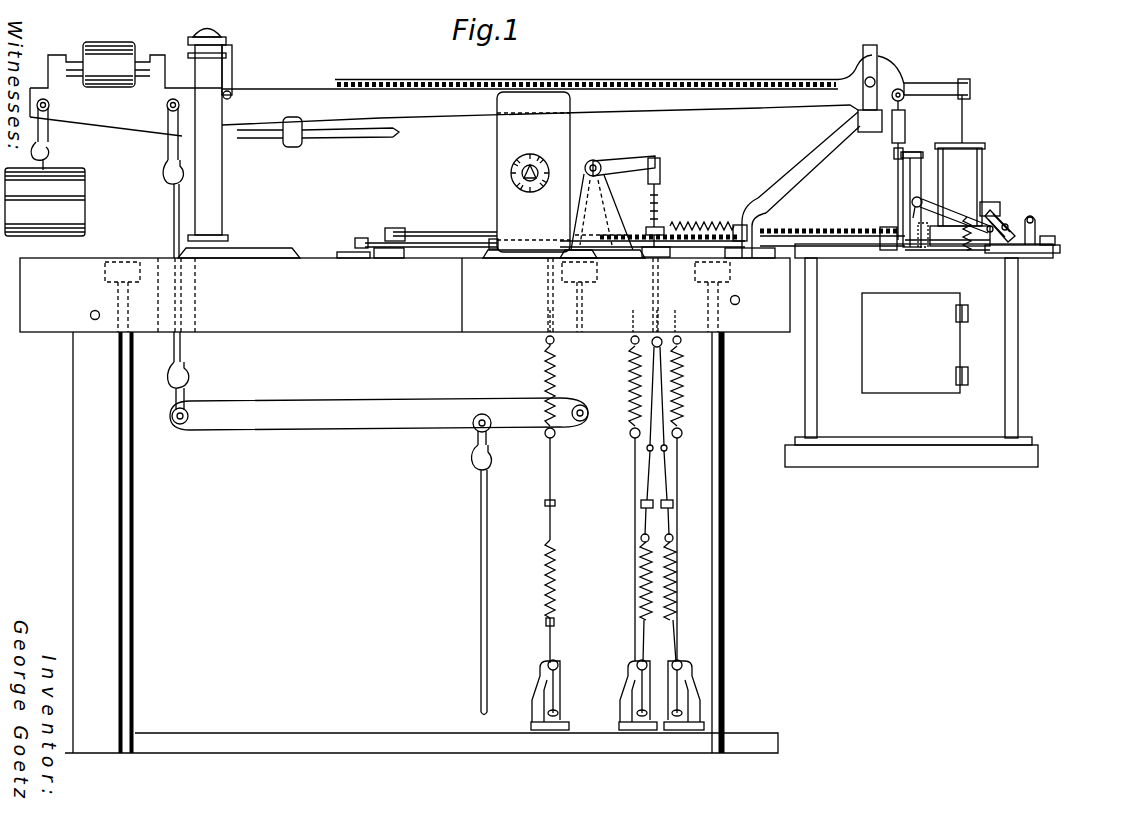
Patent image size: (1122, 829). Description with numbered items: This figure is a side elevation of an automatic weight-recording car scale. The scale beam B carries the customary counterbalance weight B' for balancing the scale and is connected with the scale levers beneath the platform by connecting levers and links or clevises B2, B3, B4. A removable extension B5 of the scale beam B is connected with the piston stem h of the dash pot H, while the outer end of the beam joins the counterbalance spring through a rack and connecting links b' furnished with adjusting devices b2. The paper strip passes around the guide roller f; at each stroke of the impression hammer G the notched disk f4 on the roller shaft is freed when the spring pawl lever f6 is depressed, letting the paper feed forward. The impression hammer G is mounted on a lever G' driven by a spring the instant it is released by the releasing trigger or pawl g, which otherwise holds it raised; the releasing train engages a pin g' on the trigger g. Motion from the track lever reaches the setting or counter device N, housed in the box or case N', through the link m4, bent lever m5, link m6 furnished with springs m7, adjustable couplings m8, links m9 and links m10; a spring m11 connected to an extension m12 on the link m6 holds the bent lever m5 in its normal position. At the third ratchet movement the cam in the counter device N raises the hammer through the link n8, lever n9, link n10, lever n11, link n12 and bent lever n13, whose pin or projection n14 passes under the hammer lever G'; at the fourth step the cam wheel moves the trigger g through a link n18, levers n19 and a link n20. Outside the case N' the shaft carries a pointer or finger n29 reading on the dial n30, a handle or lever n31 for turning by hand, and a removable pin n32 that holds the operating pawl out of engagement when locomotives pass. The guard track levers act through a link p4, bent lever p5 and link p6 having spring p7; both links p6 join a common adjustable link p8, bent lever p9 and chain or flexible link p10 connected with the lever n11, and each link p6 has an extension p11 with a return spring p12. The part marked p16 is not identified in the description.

The scale beam B is at (467, 95).
The counterbalance weight B' is at (126, 66).
The connecting link or clevis B2 is at (172, 208).
The connecting lever B3 is at (350, 432).
The connecting link B4 is at (478, 549).
The removable extension B5 is at (940, 82).
The dash pot H is at (982, 196).
The piston stem h is at (965, 136).
The connecting links b' is at (900, 168).
The adjusting devices b2 is at (893, 158).
The impression hammer G is at (894, 207).
The impression hammer lever G' is at (956, 240).
The releasing trigger or pawl g is at (1043, 222).
The pin g' is at (1022, 260).
The guide roller f is at (905, 250).
The notched disk f4 is at (922, 248).
The spring pawl lever f6 is at (937, 216).
The setting or counter device N is at (530, 154).
The box or case N' is at (529, 175).
The link n8 is at (438, 229).
The lever n9 is at (391, 226).
The link n10 is at (808, 232).
The lever n11 is at (1005, 222).
The link n12 is at (1000, 207).
The bent lever n13 is at (1000, 262).
The pin or projection n14 is at (975, 248).
The link n18 is at (438, 249).
The levers n19 is at (353, 244).
The link n20 is at (790, 244).
The pointer or finger n29 is at (531, 156).
The dial n30 is at (518, 186).
The handle or lever n31 is at (512, 178).
The removable pin n32 is at (548, 173).
The link p4 is at (646, 712).
The bent lever p5 is at (677, 716).
The link p6 is at (656, 333).
The spring p7 is at (672, 580).
The common adjustable link p8 is at (659, 208).
The bent lever p9 is at (622, 160).
The chain or flexible link p10 is at (858, 241).
The extension p11 is at (633, 464).
The spring p12 is at (628, 382).
The guide p16 is at (700, 240).
The link m4 is at (559, 713).
The bent lever m5 is at (561, 697).
The link m6 is at (548, 625).
The springs m7 is at (556, 548).
The adjustable couplings m8 is at (556, 505).
The links m9 is at (545, 381).
The links m10 is at (543, 288).
The spring m11 is at (546, 360).
The extension m12 is at (546, 458).